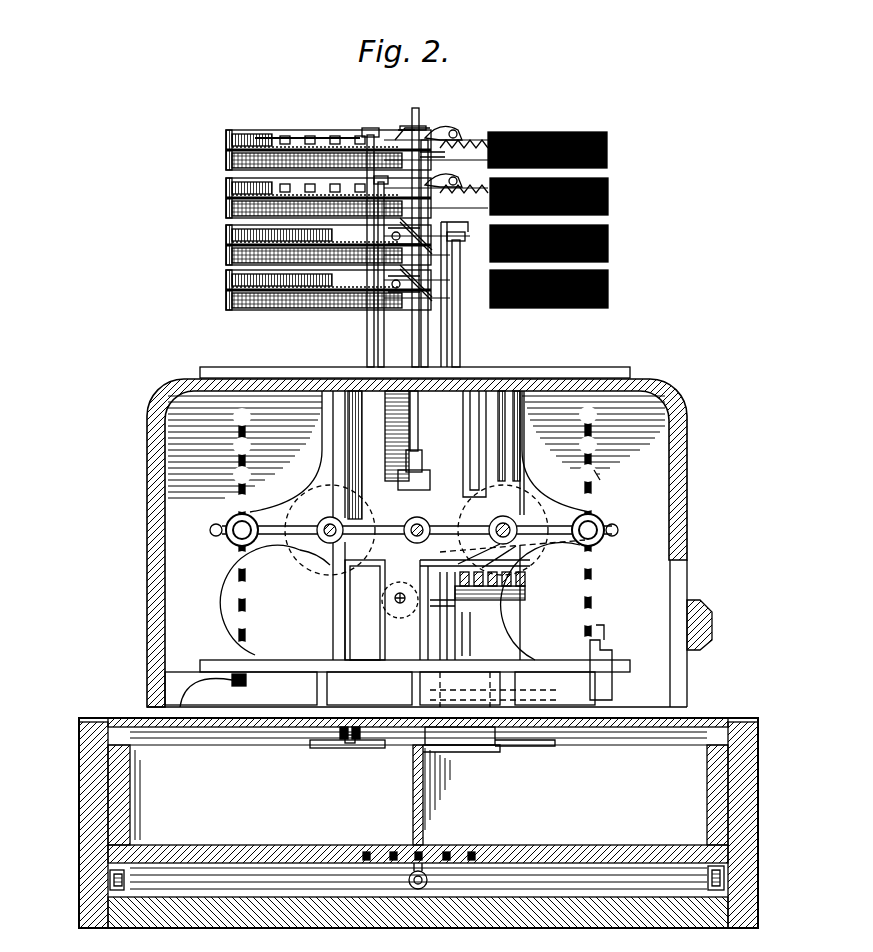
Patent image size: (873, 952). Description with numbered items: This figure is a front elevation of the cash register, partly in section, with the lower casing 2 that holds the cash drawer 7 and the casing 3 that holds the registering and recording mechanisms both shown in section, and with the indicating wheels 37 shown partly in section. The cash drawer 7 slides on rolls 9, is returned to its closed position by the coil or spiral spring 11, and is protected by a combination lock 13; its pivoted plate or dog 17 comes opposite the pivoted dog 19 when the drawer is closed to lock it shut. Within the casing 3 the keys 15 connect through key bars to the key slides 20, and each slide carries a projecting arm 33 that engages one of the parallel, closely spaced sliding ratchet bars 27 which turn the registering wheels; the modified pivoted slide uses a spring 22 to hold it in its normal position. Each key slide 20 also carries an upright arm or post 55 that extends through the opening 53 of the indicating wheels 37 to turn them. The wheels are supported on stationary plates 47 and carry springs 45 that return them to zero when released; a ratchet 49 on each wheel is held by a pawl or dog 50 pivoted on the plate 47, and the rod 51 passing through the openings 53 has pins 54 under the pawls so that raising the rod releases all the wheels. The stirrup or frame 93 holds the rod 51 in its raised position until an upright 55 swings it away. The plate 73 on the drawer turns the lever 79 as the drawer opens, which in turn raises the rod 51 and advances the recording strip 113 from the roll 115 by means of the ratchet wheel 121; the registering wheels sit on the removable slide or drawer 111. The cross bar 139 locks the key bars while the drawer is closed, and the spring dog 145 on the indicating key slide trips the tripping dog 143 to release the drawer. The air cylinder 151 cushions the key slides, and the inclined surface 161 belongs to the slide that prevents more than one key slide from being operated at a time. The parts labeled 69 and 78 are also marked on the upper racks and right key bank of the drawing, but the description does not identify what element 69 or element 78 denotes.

The casing 2 is at (760, 742).
The casing 3 is at (688, 452).
The cash drawer 7 is at (222, 852).
The rolls 9 is at (110, 878).
The coil or spiral spring 11 is at (428, 881).
The combination lock 13 is at (458, 852).
The keys 15 is at (232, 592).
The pivoted plate or dog 17 is at (372, 748).
The pivoted dog 19 is at (352, 745).
The key slide 20 is at (322, 540).
The spring 22 is at (212, 536).
The sliding ratchet bars 27 is at (305, 572).
The projecting arm 33 is at (345, 576).
The indicating wheels 37 is at (608, 153).
The springs 45 is at (445, 156).
The plates 47 is at (446, 135).
The ratchet 49 is at (458, 138).
The pawl or dog 50 is at (445, 226).
The rod 51 is at (421, 112).
The opening 53 is at (352, 132).
The pins 54 is at (398, 138).
The upright arm or post 55 is at (364, 334).
The type bar 69 is at (268, 140).
The plate 73 is at (468, 752).
The key stem 78 is at (597, 488).
The lever 79 is at (476, 732).
The stirrup or frame 93 is at (472, 470).
The slide or drawer 111 is at (688, 676).
The recording strip 113 is at (450, 630).
The roll 115 is at (452, 653).
The ratchet wheel 121 is at (496, 745).
The cross bar 139 is at (250, 680).
The tripping dog 143 is at (606, 663).
The spring dog 145 is at (612, 642).
The air cylinder 151 is at (372, 664).
The inclined surface 161 is at (410, 615).